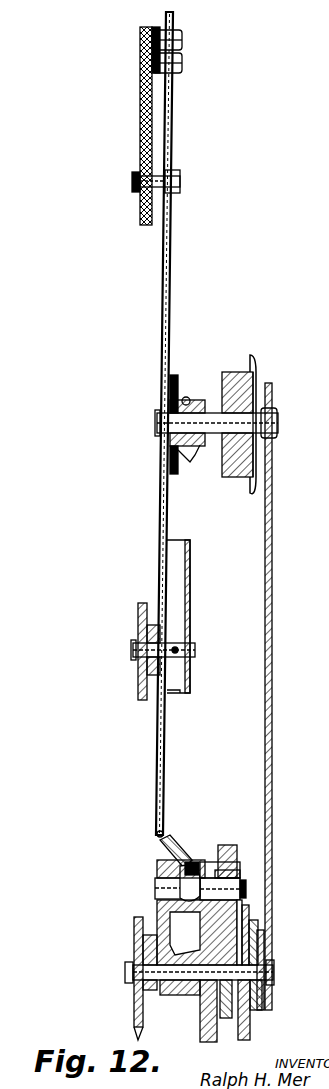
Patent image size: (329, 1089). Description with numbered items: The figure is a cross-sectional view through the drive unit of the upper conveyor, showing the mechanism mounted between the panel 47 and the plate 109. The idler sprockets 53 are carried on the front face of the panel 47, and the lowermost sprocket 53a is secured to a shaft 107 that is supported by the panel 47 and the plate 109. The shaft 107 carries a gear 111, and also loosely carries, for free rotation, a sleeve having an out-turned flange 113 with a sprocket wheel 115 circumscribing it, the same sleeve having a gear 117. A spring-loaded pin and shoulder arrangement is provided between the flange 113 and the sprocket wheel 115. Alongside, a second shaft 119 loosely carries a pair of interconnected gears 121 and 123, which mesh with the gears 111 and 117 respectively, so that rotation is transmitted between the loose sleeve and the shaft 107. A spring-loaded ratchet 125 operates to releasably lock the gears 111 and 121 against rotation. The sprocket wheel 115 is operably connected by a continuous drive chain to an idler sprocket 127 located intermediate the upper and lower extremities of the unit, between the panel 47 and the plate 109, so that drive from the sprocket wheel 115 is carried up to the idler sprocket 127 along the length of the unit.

The panel 47 is at (167, 738).
The idler sprocket 53 is at (138, 684).
The lowermost sprocket 53a is at (135, 936).
The shaft 107 is at (274, 970).
The plate 109 is at (273, 757).
The gear 111 is at (200, 1018).
The out-turned flange 113 is at (260, 945).
The sprocket wheel 115 is at (250, 914).
The gear 117 is at (228, 1020).
The shaft 119 is at (210, 862).
The gear 121 is at (200, 862).
The gear 123 is at (232, 845).
The spring-loaded ratchet 125 is at (158, 868).
The idler sprocket 127 is at (227, 480).